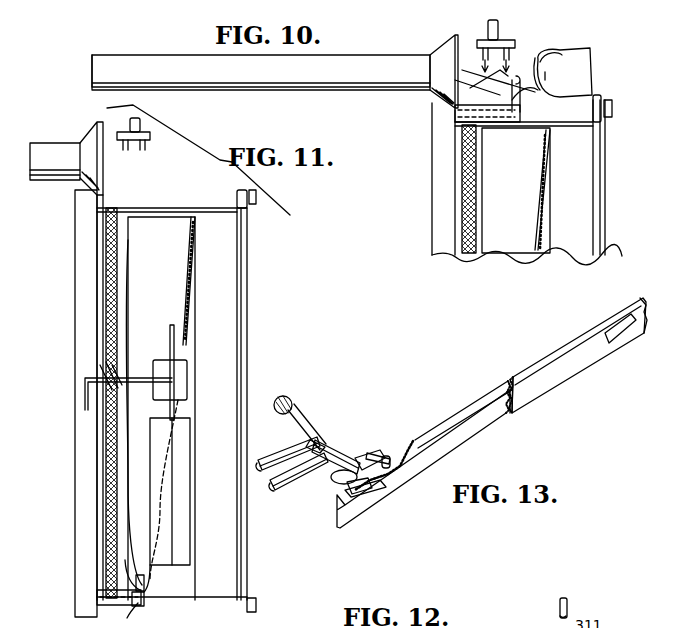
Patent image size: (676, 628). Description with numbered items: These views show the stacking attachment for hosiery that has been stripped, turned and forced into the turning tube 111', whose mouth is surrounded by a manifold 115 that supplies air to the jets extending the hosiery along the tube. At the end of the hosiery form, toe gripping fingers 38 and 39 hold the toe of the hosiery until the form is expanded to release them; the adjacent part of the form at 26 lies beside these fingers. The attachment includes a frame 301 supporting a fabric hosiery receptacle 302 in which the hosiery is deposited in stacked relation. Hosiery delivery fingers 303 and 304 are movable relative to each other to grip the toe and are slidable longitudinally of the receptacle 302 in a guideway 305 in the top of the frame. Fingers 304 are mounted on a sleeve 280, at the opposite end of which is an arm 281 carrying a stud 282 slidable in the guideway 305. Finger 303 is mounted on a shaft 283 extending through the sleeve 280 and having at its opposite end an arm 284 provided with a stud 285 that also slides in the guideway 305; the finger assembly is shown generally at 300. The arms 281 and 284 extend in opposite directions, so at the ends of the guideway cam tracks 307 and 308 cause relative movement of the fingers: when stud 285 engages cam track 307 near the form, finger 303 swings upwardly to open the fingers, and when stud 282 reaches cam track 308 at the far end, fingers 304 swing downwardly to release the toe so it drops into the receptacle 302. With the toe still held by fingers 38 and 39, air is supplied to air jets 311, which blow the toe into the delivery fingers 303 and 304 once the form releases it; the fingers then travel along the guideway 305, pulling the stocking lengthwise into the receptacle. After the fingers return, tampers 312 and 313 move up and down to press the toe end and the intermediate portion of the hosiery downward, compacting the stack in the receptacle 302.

In FIG. 10, the door frame member 26 is at (586, 60).
In FIG. 10, the toe gripping finger 38 is at (538, 58).
In FIG. 10, the toe gripping finger 39 is at (559, 73).
In FIG. 10, the turning tube 111' is at (261, 83).
In FIG. 11, the turning tube 111' is at (55, 151).
In FIG. 10, the manifold 115 is at (427, 98).
In FIG. 11, the manifold 115 is at (104, 176).
In FIG. 13, the sleeve 280 is at (346, 459).
In FIG. 13, the arm 281 is at (377, 452).
In FIG. 13, the stud 282 is at (395, 462).
In FIG. 13, the shaft 283 is at (312, 446).
In FIG. 13, the arm 284 is at (333, 502).
In FIG. 13, the stud 285 is at (330, 478).
In FIG. 13, the handle tube 300 is at (322, 452).
In FIG. 11, the frame 301 is at (246, 606).
In FIG. 10, the fabric hosiery receptacle 302 is at (566, 247).
In FIG. 11, the fabric hosiery receptacle 302 is at (228, 557).
In FIG. 10, the hosiery delivery finger 303 is at (515, 108).
In FIG. 11, the hosiery delivery finger 303 is at (147, 582).
In FIG. 13, the hosiery delivery finger 303 is at (288, 397).
In FIG. 10, the hosiery delivery finger 304 is at (518, 97).
In FIG. 11, the hosiery delivery finger 304 is at (141, 598).
In FIG. 13, the hosiery delivery finger 304 is at (277, 480).
In FIG. 13, the guideway 305 is at (480, 428).
In FIG. 13, the cam track 307 is at (365, 498).
In FIG. 13, the cam track 308 is at (620, 340).
In FIG. 10, the air jets 311 is at (493, 40).
In FIG. 11, the air jets 311 is at (133, 143).
In FIG. 11, the tamper 312 is at (176, 404).
In FIG. 11, the tamper 313 is at (174, 338).